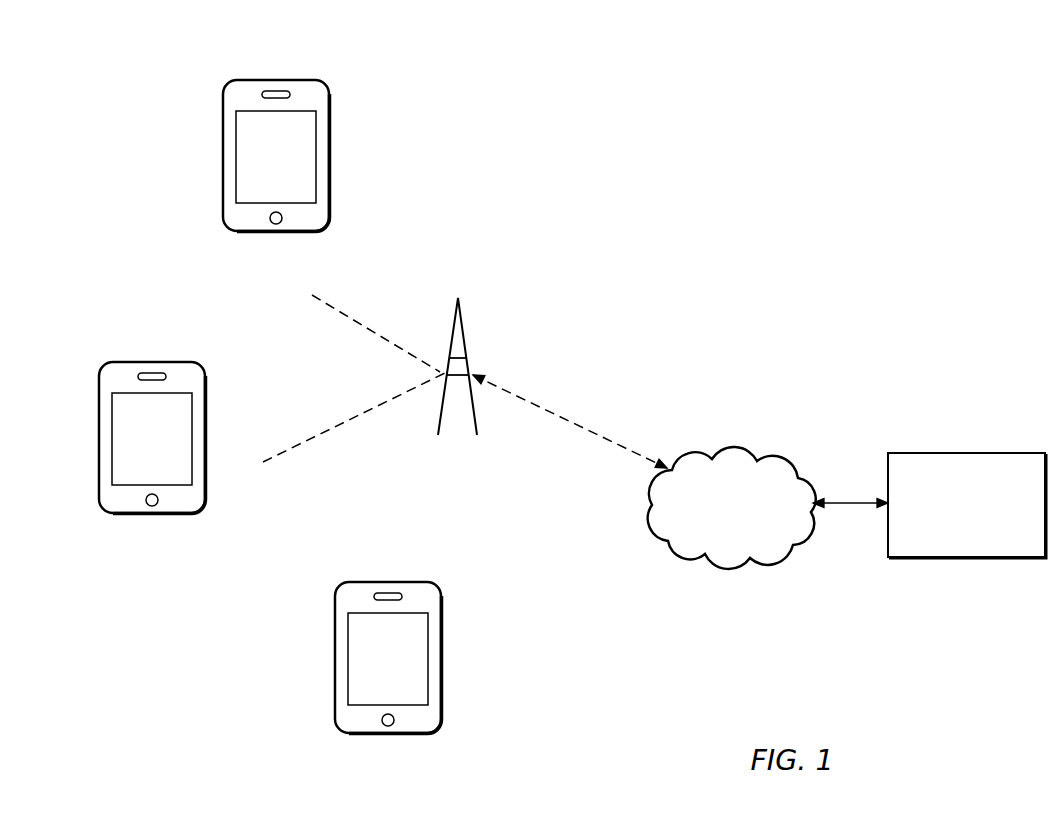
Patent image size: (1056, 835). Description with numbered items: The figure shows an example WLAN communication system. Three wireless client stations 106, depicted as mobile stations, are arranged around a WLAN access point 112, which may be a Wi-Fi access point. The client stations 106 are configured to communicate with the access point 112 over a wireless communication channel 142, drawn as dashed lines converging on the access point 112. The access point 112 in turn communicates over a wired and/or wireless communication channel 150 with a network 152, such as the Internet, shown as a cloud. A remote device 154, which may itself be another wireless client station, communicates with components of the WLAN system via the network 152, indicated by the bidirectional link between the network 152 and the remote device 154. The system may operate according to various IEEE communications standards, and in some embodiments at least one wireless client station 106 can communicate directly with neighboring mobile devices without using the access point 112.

The wireless client station 106 is at (272, 232).
The access point 112 is at (473, 432).
The wireless communication channel 142 is at (362, 412).
The communication channel 150 is at (573, 425).
The network 152 is at (716, 525).
The remote device 154 is at (950, 535).